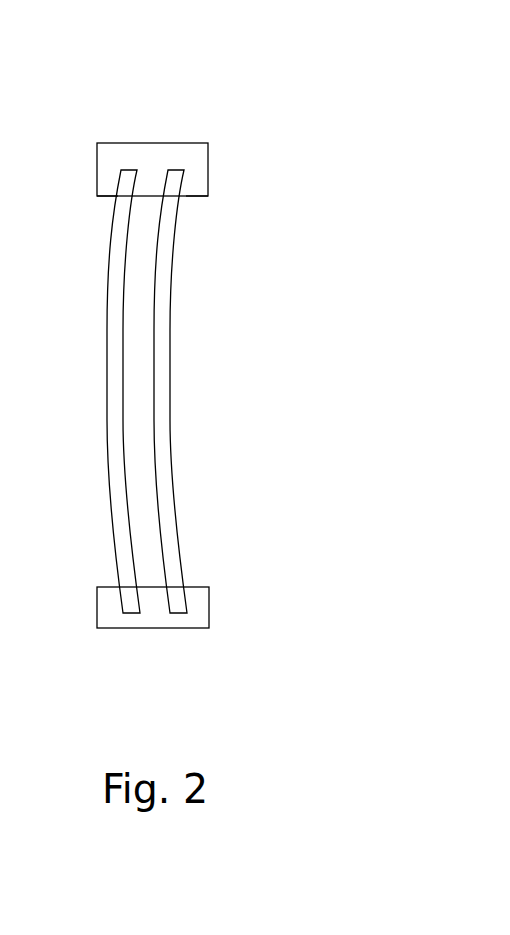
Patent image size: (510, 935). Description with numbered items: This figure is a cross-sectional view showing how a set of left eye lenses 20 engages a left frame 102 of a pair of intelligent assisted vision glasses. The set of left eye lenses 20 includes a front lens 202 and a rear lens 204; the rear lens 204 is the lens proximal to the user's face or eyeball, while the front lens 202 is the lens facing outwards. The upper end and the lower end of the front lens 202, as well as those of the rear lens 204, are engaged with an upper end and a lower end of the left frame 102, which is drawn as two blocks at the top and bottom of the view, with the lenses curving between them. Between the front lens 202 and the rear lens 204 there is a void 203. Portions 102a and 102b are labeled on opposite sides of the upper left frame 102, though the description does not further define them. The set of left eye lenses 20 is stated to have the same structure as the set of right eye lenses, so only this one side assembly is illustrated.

The set of left eye lenses 20 is at (215, 62).
The left frame 102 is at (193, 169).
The first side of anchor block 102a is at (203, 197).
The second side of anchor block 102b is at (108, 197).
The front lens 202 is at (133, 181).
The rear lens 204 is at (175, 181).
The void 203 is at (142, 415).